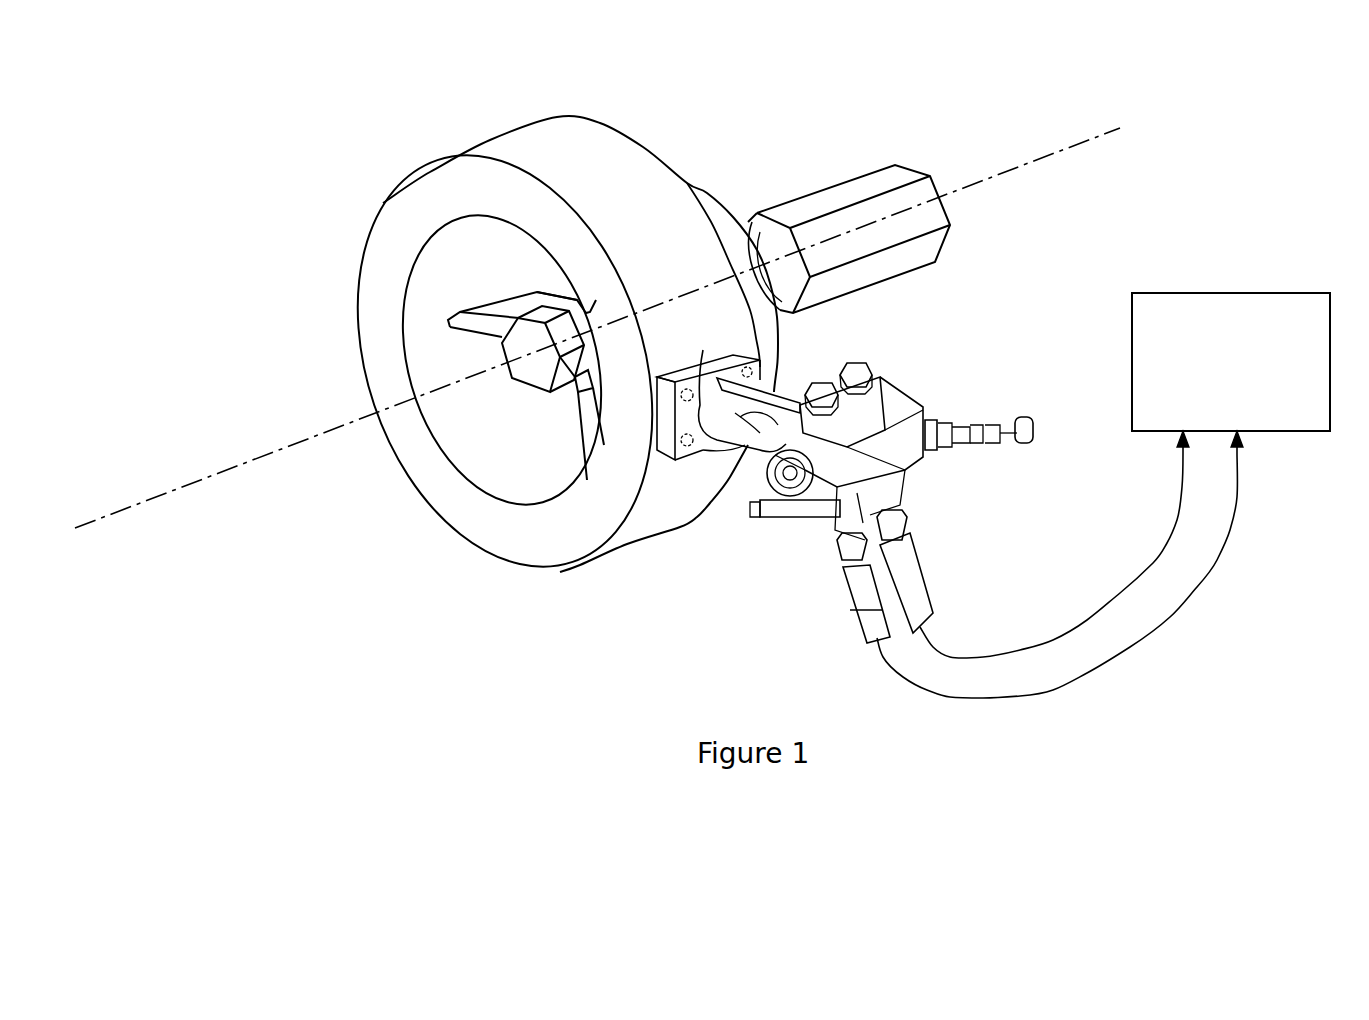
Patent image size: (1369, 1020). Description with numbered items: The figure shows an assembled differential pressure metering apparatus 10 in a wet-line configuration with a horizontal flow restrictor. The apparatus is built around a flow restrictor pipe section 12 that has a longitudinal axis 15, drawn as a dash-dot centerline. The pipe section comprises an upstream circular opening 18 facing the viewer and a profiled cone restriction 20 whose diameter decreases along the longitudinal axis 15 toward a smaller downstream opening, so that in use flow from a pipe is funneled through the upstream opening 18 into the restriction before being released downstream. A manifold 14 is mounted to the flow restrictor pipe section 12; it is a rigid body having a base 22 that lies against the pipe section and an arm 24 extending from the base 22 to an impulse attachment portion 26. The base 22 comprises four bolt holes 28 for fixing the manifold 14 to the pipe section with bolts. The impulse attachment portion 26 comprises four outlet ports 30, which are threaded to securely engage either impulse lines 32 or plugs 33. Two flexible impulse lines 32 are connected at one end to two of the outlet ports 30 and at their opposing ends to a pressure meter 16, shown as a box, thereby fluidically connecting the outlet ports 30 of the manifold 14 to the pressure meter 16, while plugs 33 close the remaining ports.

The differential pressure metering apparatus 10 is at (226, 136).
The flow restrictor pipe section 12 is at (512, 351).
The manifold 14 is at (920, 508).
The longitudinal axis 15 is at (1058, 162).
The pressure meter 16 is at (1268, 312).
The upstream circular opening 18 is at (420, 368).
The profiled cone restriction 20 is at (678, 165).
The base 22 is at (680, 447).
The arm 24 is at (770, 397).
The impulse attachment portion 26 is at (905, 430).
The bolt holes 28 is at (688, 390).
The outlet ports 30 is at (872, 378).
The impulse lines 32 is at (875, 620).
The plugs 33 is at (865, 372).